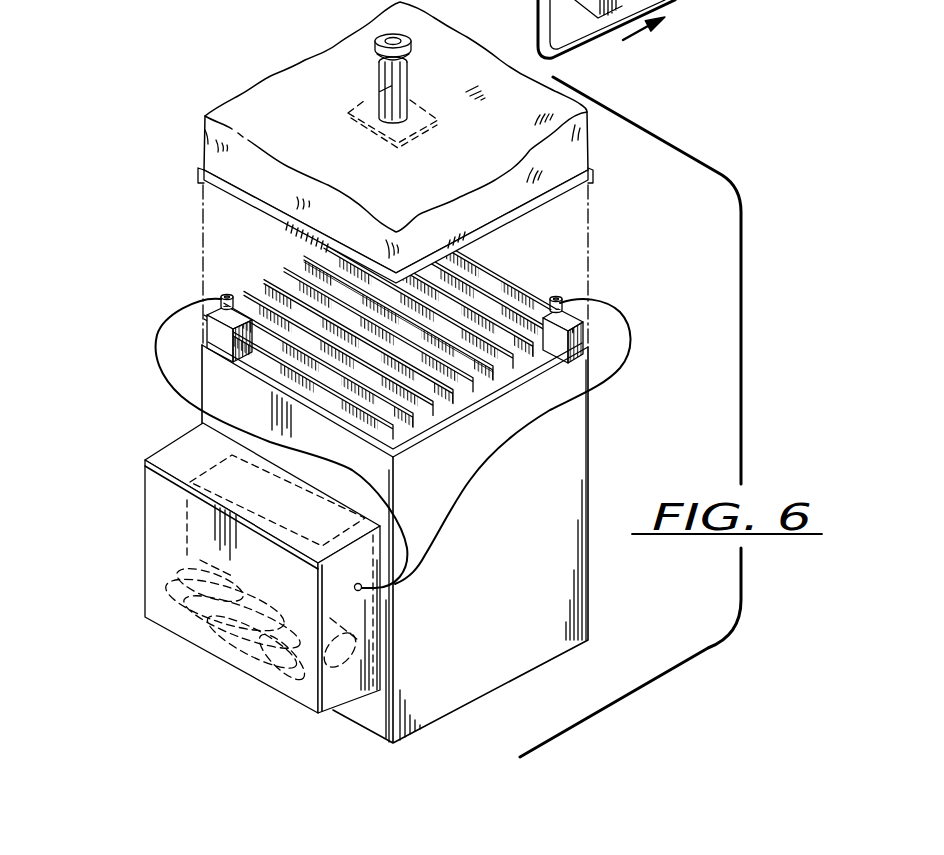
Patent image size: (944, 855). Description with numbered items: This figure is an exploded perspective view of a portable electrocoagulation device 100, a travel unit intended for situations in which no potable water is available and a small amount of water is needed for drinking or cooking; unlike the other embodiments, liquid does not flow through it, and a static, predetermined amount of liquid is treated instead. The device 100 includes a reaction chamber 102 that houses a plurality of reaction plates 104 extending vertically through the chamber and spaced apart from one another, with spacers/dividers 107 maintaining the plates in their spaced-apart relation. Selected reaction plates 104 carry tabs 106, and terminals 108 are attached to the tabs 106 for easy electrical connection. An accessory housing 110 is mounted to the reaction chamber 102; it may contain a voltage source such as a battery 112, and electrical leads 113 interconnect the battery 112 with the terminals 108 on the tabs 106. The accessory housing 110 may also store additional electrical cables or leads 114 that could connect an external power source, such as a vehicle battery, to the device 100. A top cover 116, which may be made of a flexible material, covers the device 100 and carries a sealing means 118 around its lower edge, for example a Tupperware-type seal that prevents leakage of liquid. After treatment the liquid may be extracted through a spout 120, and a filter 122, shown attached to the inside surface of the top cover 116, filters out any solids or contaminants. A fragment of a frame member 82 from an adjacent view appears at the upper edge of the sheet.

The frame member 82 is at (635, 29).
The portable electrocoagulation device 100 is at (174, 170).
The reaction chamber 102 is at (254, 411).
The reaction plates 104 is at (323, 343).
The tabs 106 is at (212, 332).
The spacers/dividers 107 is at (457, 294).
The terminals 108 is at (222, 298).
The accessory housing 110 is at (143, 572).
The battery 112 is at (203, 523).
The electrical leads 113 is at (170, 383).
The additional electrical cables or leads 114 is at (228, 634).
The top cover 116 is at (311, 128).
The sealing means 118 is at (222, 189).
The spout 120 is at (380, 43).
The filter 122 is at (364, 100).